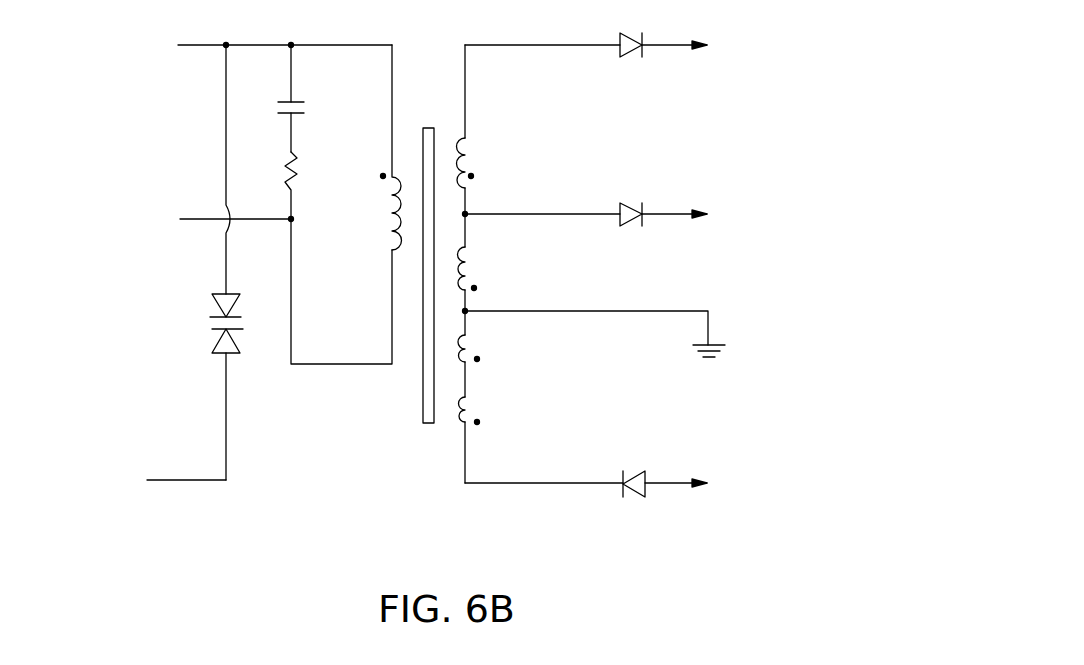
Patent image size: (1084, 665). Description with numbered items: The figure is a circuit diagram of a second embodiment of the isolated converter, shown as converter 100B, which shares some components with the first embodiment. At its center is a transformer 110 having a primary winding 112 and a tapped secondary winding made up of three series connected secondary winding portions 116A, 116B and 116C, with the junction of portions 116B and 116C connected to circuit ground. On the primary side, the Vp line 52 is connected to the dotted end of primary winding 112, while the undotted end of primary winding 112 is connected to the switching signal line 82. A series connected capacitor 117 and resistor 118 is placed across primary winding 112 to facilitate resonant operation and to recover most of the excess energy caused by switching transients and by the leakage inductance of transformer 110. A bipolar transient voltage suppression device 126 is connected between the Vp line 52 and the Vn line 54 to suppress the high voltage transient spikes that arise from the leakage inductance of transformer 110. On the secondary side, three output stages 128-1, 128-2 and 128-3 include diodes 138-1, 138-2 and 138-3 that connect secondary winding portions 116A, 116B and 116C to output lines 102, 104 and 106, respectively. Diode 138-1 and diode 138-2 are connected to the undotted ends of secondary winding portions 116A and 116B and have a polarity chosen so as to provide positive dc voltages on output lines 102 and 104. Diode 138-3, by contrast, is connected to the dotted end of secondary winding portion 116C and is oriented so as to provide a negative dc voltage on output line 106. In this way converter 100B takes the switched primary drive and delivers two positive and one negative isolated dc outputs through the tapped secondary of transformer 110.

The converter 100B is at (130, 255).
The Vp line 52 is at (178, 46).
The switching signal line 82 is at (196, 219).
The Vn line 54 is at (178, 480).
The bipolar transient voltage suppression device 126 is at (212, 318).
The capacitor 117 is at (297, 100).
The resistor 118 is at (298, 165).
The primary winding 112 is at (390, 218).
The transformer 110 is at (425, 457).
The secondary winding portion 116A is at (463, 148).
The secondary winding portion 116B is at (463, 263).
The secondary winding portion 116C is at (527, 337).
The diode 138-1 is at (631, 58).
The diode 138-2 is at (631, 227).
The diode 138-3 is at (631, 498).
The output line 102 is at (698, 47).
The output line 104 is at (698, 216).
The output line 106 is at (678, 486).
The output stage 128-1 is at (748, 153).
The output stage 128-2 is at (748, 286).
The output stage 128-3 is at (748, 413).